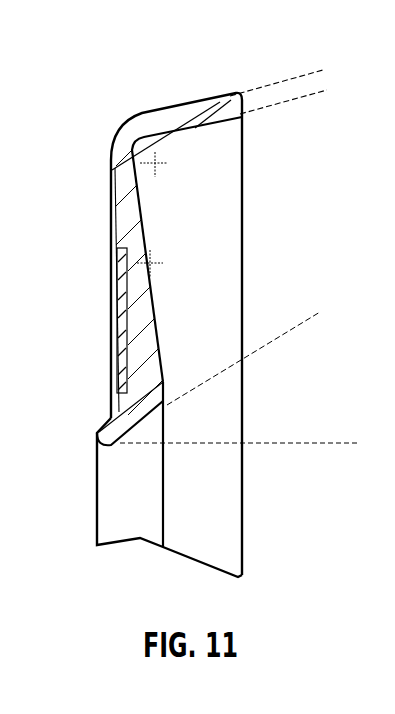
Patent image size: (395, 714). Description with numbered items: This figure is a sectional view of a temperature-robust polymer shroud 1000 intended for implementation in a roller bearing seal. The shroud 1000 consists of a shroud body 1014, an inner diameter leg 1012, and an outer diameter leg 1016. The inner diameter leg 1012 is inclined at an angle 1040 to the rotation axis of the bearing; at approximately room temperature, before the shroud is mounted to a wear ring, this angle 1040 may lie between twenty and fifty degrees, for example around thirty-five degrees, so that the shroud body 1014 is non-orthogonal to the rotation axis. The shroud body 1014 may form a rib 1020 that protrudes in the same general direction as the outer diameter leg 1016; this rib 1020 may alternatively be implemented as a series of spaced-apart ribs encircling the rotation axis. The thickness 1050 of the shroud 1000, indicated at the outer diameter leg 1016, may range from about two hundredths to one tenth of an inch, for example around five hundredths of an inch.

The temperature-robust polymer shroud 1000 is at (191, 311).
The inner diameter leg 1012 is at (138, 440).
The shroud body 1014 is at (140, 220).
The outer diameter leg 1016 is at (190, 108).
The rib 1020 is at (157, 277).
The angle 1040 is at (298, 325).
The thickness 1050 is at (310, 128).